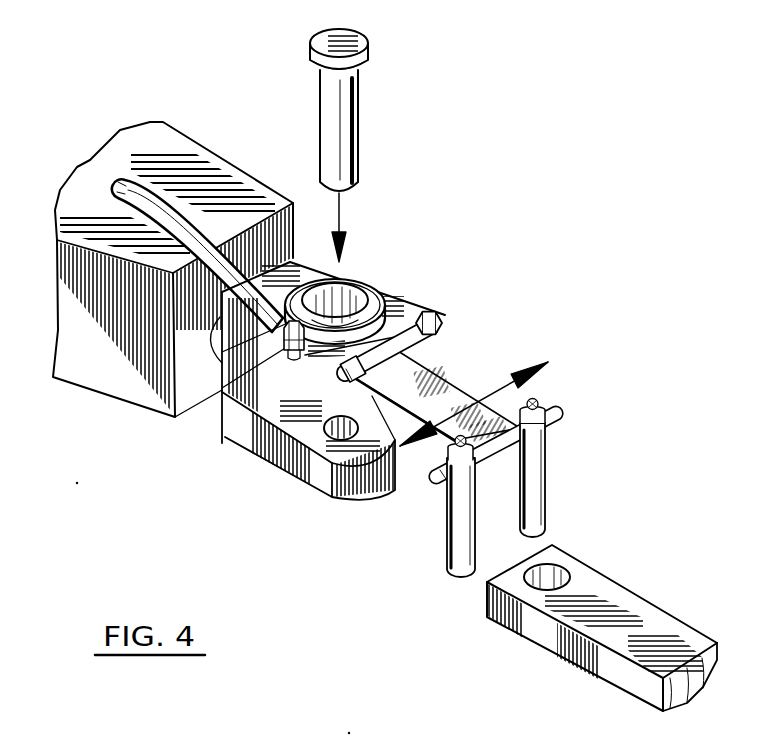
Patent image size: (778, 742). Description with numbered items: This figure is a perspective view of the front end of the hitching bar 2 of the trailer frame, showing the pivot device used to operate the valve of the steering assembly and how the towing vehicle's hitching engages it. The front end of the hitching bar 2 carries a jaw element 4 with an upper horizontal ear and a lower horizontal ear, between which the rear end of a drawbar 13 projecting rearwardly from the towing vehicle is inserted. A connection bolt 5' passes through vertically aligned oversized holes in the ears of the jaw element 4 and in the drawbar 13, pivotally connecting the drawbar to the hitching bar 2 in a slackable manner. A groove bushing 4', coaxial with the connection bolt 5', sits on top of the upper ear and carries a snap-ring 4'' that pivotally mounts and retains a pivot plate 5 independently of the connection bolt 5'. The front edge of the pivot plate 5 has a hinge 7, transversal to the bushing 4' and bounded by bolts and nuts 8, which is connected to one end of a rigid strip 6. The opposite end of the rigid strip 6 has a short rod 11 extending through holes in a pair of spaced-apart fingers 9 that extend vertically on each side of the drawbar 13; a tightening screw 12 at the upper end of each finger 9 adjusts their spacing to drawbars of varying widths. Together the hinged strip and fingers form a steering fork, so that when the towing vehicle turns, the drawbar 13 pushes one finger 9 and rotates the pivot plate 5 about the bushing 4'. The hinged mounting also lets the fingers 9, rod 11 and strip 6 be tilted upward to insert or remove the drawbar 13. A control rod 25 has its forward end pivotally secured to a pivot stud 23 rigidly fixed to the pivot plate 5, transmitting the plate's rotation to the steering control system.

The hitching bar 2 is at (299, 240).
The control rod 25 is at (158, 158).
The pivot stud 23 is at (178, 395).
The jaw element 4 is at (308, 429).
The groove bushing 4' is at (370, 271).
The snap-ring 4'' is at (362, 296).
The hinge 7 is at (432, 350).
The bolts and nuts 8 is at (446, 320).
The pivot plate 5 is at (221, 412).
The connection bolt 5' is at (376, 145).
The rigid strip 6 is at (455, 388).
The fingers 9 is at (532, 497).
The short rod 11 is at (498, 467).
The tightening screw 12 is at (537, 400).
The drawbar 13 is at (600, 590).